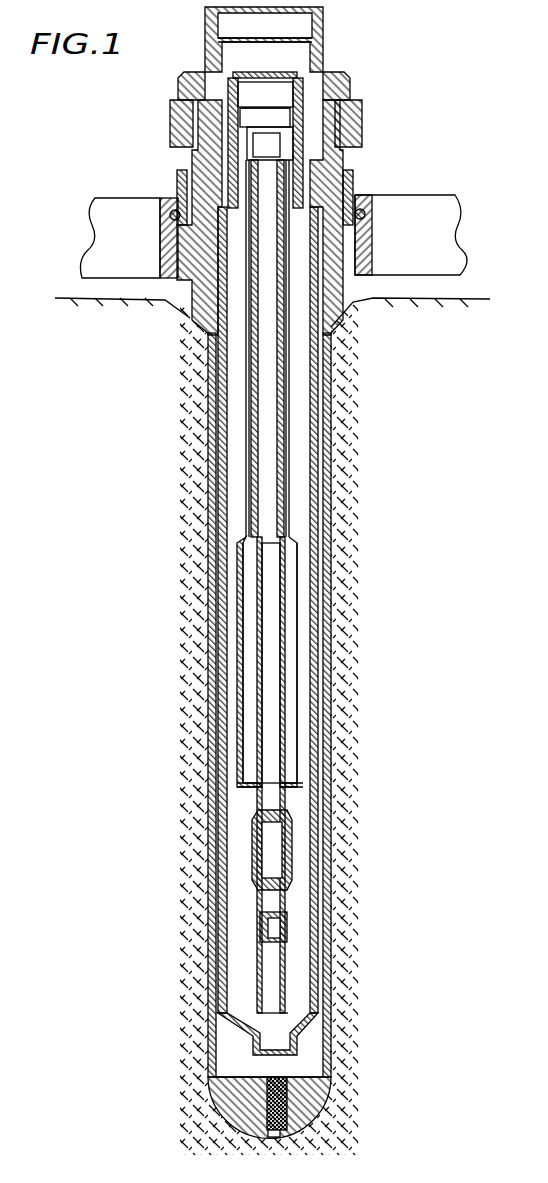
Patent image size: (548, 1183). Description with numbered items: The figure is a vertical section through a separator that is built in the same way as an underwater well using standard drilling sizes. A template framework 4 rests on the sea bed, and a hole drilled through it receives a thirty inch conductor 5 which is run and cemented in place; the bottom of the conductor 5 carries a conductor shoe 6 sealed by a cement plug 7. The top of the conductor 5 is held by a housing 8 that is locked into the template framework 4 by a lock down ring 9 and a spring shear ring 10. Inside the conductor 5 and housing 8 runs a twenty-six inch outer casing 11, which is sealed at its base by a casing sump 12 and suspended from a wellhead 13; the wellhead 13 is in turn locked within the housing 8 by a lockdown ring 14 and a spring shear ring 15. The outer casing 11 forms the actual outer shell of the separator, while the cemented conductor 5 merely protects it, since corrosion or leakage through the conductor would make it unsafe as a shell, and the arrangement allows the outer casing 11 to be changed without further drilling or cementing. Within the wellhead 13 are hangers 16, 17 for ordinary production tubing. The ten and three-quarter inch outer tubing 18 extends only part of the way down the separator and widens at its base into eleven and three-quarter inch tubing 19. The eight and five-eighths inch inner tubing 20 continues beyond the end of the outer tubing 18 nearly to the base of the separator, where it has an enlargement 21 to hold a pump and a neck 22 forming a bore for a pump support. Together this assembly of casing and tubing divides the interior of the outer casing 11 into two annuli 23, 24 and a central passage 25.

The template framework 4 is at (425, 233).
The conductor 5 is at (344, 480).
The conductor shoe 6 is at (302, 1105).
The cement plug 7 is at (267, 1105).
The housing 8 is at (333, 160).
The lock down ring 9 is at (360, 213).
The spring shear ring 10 is at (183, 173).
The outer casing 11 is at (313, 524).
The casing sump 12 is at (293, 1042).
The wellhead 13 is at (317, 43).
The lockdown ring 14 is at (348, 133).
The spring shear ring 15 is at (350, 97).
The hanger 16 is at (233, 117).
The hanger 17 is at (243, 158).
The outer tubing 18 is at (300, 412).
The tubing 19 is at (305, 610).
The inner tubing 20 is at (285, 703).
The enlargement 21 is at (292, 857).
The neck 22 is at (285, 932).
The annulus 23 is at (233, 777).
The annulus 24 is at (250, 737).
The central passage 25 is at (267, 683).